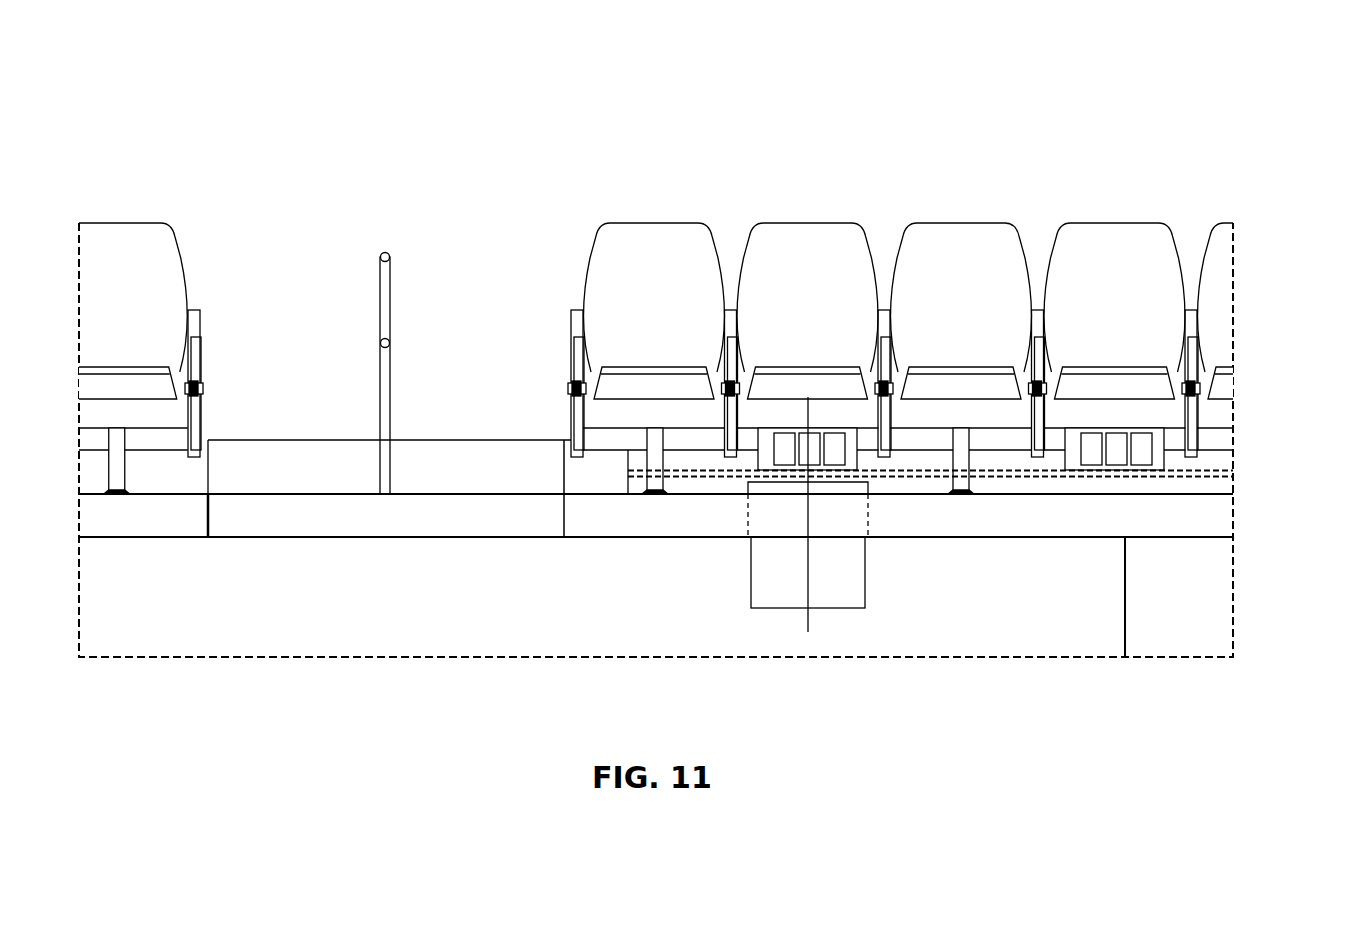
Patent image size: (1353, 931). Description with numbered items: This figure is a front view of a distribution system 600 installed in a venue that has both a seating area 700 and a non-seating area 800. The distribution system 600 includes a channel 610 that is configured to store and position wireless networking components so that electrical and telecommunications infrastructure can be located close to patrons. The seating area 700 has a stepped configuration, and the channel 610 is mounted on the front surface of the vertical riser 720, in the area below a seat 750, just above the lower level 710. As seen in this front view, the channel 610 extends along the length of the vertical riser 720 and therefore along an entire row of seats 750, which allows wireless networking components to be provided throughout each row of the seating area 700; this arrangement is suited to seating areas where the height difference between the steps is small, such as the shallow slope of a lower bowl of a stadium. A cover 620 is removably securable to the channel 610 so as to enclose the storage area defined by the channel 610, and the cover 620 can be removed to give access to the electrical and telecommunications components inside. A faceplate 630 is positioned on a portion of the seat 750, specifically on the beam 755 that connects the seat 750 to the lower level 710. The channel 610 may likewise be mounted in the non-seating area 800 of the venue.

The distribution system 600 is at (1264, 438).
The channel 610 is at (715, 482).
The cover 620 is at (866, 578).
The faceplate 630 is at (833, 438).
The seating area 700 is at (692, 288).
The lower level 710 is at (612, 515).
The vertical riser 720 is at (577, 470).
The seat 750 is at (670, 245).
The beam 755 is at (682, 440).
The non-seating area 800 is at (334, 318).